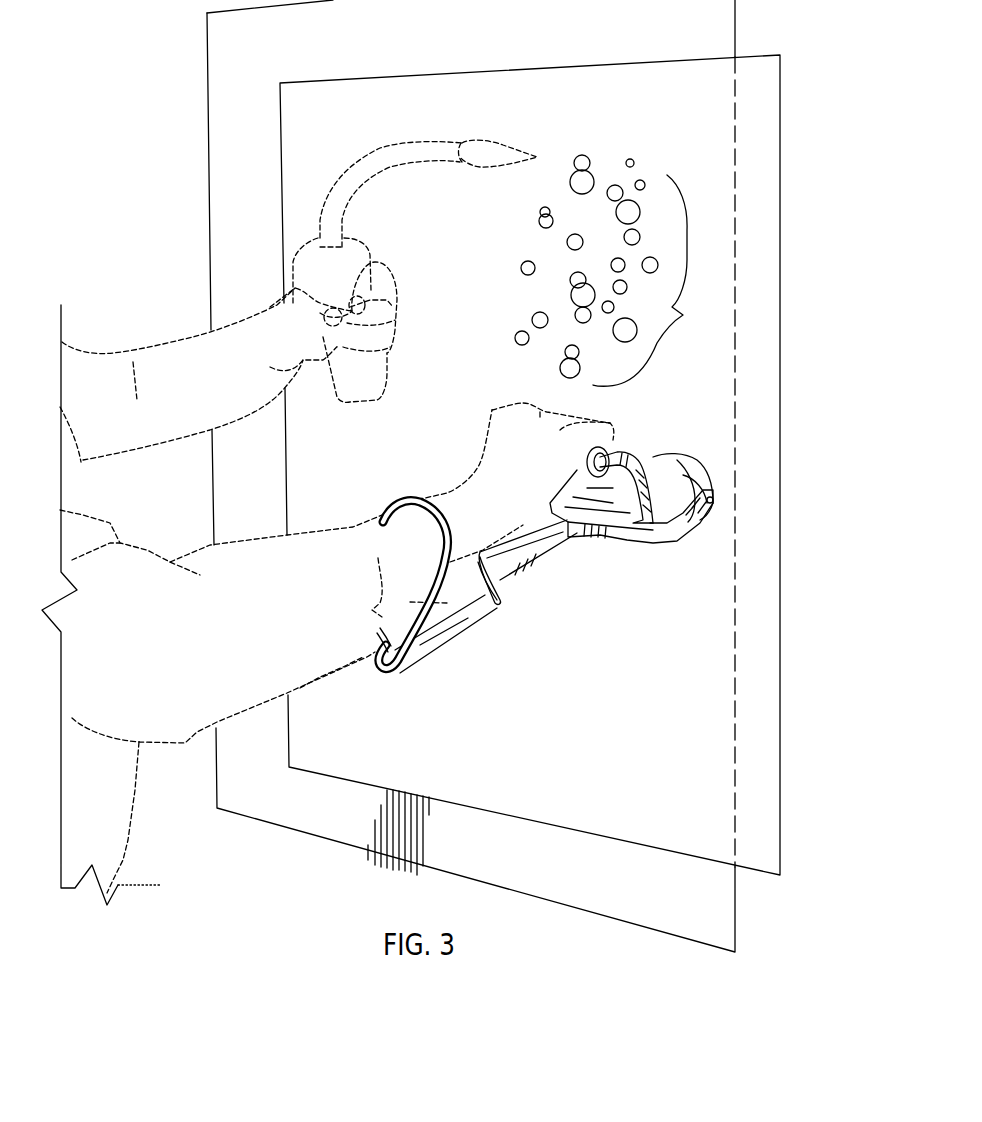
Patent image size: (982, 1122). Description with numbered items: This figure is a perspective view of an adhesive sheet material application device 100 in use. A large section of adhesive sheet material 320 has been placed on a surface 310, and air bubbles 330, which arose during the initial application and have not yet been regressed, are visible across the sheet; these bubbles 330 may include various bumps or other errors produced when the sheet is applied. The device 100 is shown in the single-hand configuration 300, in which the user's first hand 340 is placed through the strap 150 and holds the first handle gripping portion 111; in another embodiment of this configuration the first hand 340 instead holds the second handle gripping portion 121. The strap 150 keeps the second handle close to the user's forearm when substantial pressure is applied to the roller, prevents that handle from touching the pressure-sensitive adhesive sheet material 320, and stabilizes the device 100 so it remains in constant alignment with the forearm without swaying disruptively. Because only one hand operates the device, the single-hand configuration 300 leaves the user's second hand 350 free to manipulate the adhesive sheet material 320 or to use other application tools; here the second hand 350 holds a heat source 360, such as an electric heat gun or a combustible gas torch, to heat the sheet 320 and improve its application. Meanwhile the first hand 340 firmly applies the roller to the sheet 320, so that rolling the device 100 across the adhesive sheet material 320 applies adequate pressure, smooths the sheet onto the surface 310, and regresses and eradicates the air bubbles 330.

The adhesive sheet material application device 100 is at (631, 457).
The first handle gripping portion 111 is at (620, 447).
The second handle gripping portion 121 is at (448, 603).
The strap 150 is at (403, 500).
The single-hand configuration 300 is at (545, 555).
The surface 310 is at (708, 905).
The adhesive sheet material 320 is at (750, 623).
The air bubbles 330 is at (617, 270).
The user's first hand 340 is at (490, 408).
The user's second hand 350 is at (250, 327).
The heat source 360 is at (347, 200).